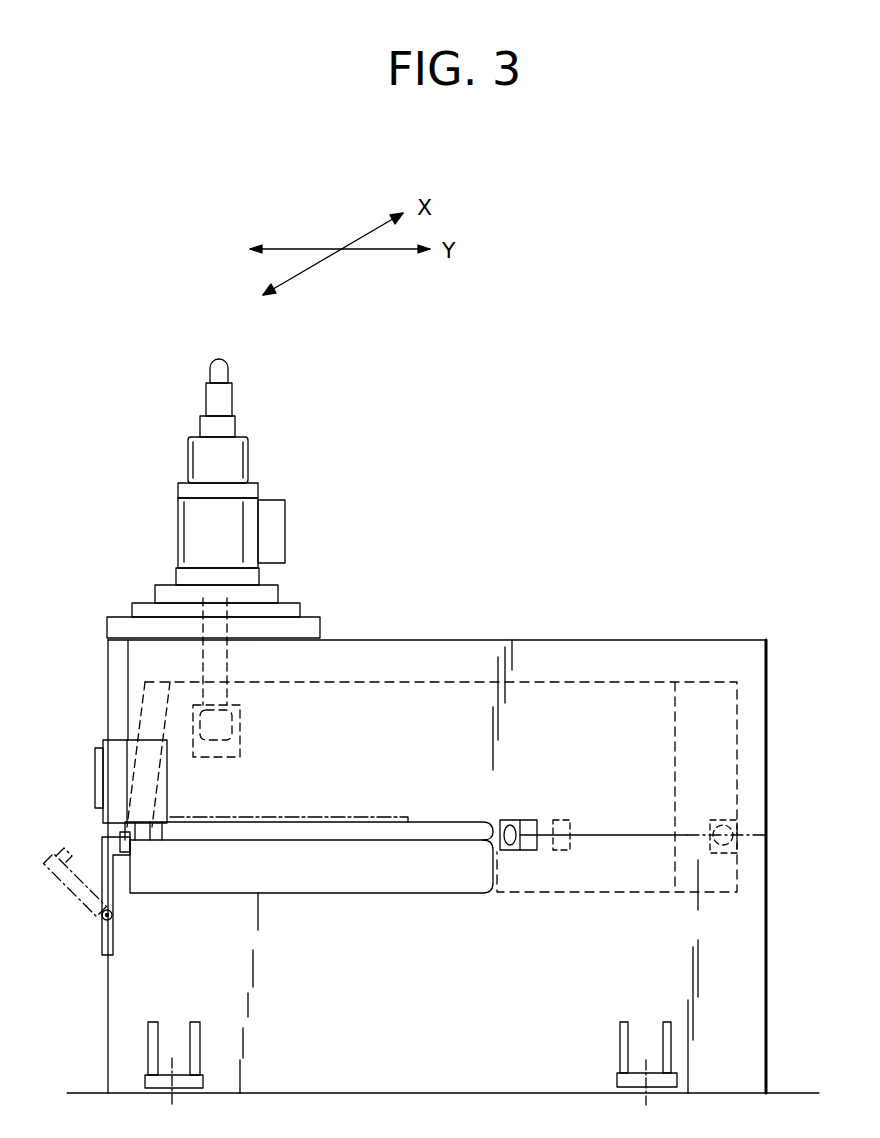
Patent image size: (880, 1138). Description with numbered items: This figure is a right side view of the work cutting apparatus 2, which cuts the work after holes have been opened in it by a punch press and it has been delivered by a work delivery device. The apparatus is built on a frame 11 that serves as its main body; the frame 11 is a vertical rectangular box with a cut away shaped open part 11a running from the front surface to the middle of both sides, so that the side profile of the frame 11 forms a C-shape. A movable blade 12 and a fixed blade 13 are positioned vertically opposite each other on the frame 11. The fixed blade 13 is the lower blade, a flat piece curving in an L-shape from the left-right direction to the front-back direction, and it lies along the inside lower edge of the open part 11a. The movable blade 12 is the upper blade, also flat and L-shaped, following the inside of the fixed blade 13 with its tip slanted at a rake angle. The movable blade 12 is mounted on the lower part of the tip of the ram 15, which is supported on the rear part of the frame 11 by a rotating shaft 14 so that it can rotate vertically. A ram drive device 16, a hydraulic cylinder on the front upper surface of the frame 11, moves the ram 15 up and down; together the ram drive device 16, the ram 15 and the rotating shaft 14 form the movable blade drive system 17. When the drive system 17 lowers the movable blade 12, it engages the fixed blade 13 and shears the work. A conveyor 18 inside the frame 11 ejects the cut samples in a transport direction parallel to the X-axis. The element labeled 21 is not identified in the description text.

The work cutting apparatus 2 is at (587, 400).
The frame 11 is at (681, 640).
The cut away shaped open part 11a is at (298, 888).
The movable blade 12 is at (130, 828).
The fixed blade 13 is at (102, 845).
The rotating shaft 14 is at (613, 835).
The ram 15 is at (449, 680).
The ram drive device 16 is at (247, 530).
The movable blade drive system 17 is at (560, 520).
The conveyor 18 is at (368, 815).
The positioning bolt 21 is at (512, 845).